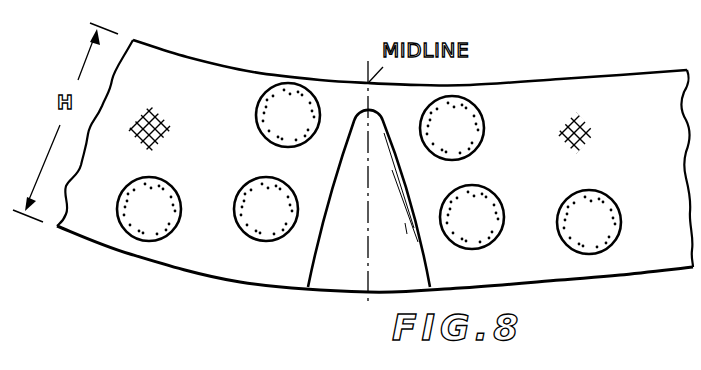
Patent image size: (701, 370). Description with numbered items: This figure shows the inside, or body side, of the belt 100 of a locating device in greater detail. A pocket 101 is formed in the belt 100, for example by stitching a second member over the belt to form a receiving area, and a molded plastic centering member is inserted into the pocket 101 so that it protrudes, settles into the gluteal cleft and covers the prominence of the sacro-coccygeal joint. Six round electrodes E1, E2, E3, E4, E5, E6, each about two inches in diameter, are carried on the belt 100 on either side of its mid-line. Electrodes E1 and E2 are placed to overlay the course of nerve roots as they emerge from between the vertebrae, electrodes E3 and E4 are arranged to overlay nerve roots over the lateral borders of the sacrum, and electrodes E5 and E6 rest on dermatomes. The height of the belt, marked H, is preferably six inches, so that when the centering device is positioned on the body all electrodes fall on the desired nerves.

The belt 100 is at (194, 285).
The pocket 101 is at (357, 270).
The electrode E1 is at (452, 128).
The electrode E2 is at (288, 115).
The electrode E3 is at (472, 217).
The electrode E4 is at (266, 209).
The electrode E5 is at (589, 222).
The electrode E6 is at (149, 209).